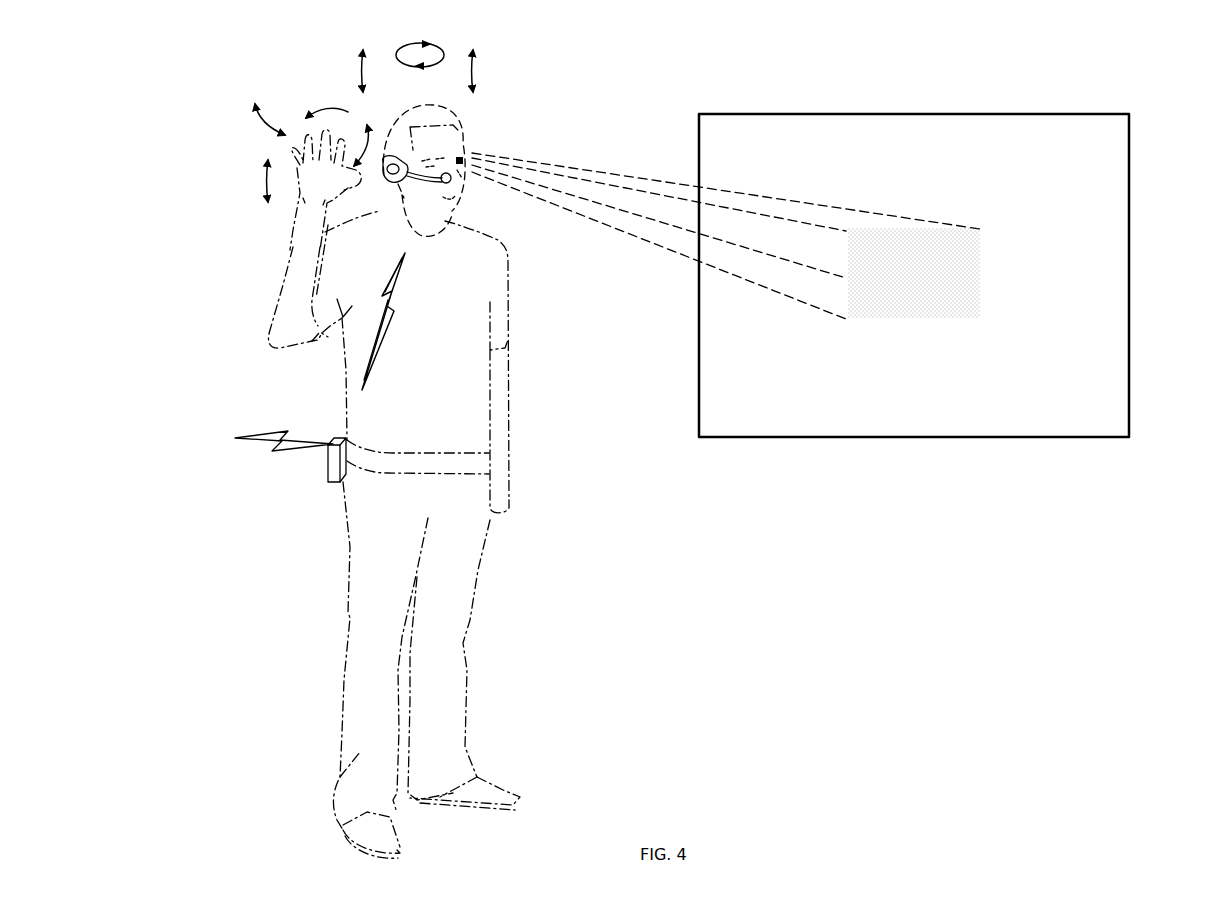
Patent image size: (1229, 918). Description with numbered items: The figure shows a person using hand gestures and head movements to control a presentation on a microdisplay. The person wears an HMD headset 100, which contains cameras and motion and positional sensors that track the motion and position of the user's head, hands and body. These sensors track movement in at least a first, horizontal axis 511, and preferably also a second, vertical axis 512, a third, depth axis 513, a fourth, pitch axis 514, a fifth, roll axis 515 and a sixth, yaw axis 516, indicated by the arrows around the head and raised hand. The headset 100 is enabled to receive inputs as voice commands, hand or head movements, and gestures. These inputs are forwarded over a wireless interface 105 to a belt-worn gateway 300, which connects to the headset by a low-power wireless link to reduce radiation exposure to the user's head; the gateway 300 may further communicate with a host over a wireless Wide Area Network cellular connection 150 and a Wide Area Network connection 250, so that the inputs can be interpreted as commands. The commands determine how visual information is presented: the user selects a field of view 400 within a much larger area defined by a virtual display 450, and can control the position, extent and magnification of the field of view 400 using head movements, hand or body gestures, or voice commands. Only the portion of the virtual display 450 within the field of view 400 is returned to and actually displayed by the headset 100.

The HMD headset 100 is at (392, 185).
The wireless interface 105 is at (380, 338).
The wireless Wide Area Network cellular connection 150 is at (249, 418).
The Wide Area Network connection 250 is at (268, 437).
The gateway 300 is at (330, 468).
The field of view 400 is at (980, 275).
The virtual display 450 is at (786, 437).
The first axis (horizontal) 511 is at (478, 70).
The second axis (vertical) 512 is at (358, 70).
The third axis (depth) 513 is at (265, 183).
The fourth axis (pitch) 514 is at (262, 117).
The fifth axis (roll) 515 is at (400, 60).
The sixth axis (yaw) 516 is at (370, 117).